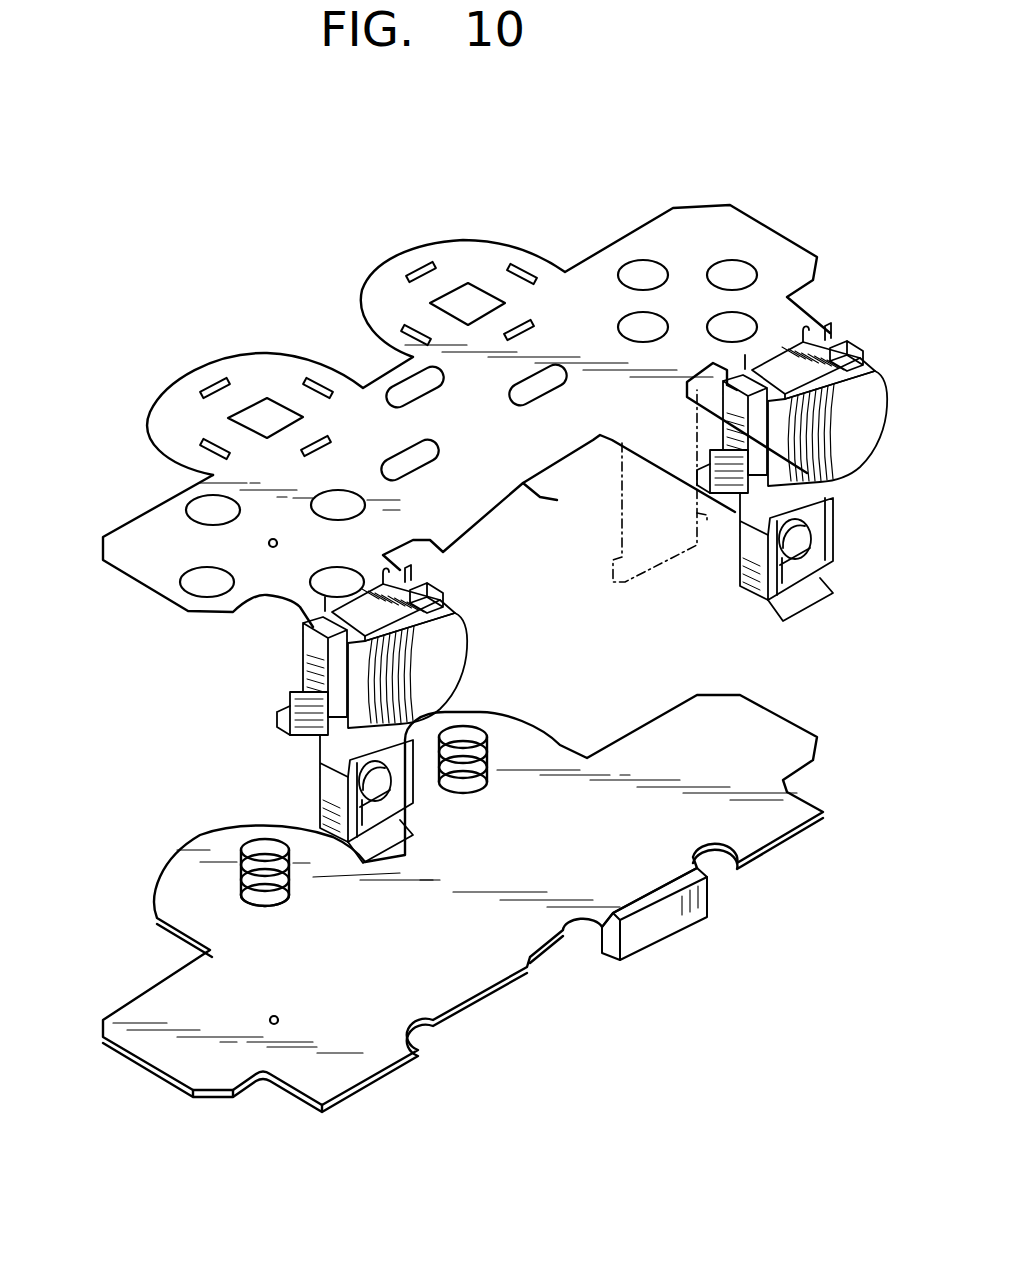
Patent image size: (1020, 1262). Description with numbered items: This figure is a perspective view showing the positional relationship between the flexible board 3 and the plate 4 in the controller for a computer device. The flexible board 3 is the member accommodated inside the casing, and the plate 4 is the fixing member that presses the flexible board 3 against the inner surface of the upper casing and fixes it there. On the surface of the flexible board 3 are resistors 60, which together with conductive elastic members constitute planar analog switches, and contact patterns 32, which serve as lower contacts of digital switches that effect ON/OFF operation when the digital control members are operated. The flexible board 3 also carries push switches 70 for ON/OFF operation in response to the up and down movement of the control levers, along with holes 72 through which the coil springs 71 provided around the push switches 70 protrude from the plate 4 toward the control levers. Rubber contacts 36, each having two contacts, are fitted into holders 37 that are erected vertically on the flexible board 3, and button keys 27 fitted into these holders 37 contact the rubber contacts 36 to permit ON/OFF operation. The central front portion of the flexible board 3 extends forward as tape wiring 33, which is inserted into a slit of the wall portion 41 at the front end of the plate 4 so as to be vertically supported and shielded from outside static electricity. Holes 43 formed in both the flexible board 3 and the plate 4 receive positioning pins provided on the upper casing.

The flexible board 3 is at (741, 211).
The plate 4 is at (797, 727).
The button key 27 is at (366, 714).
The contact pattern 32 is at (730, 262).
The tape wiring 33 is at (723, 470).
The rubber contact 36 is at (372, 785).
The holder 37 is at (335, 800).
The wall portion 41 is at (653, 923).
The hole 43 is at (271, 543).
The resistor 60 is at (205, 445).
The push switch 70 is at (265, 856).
The coil spring 71 is at (240, 885).
The hole 72 is at (267, 420).